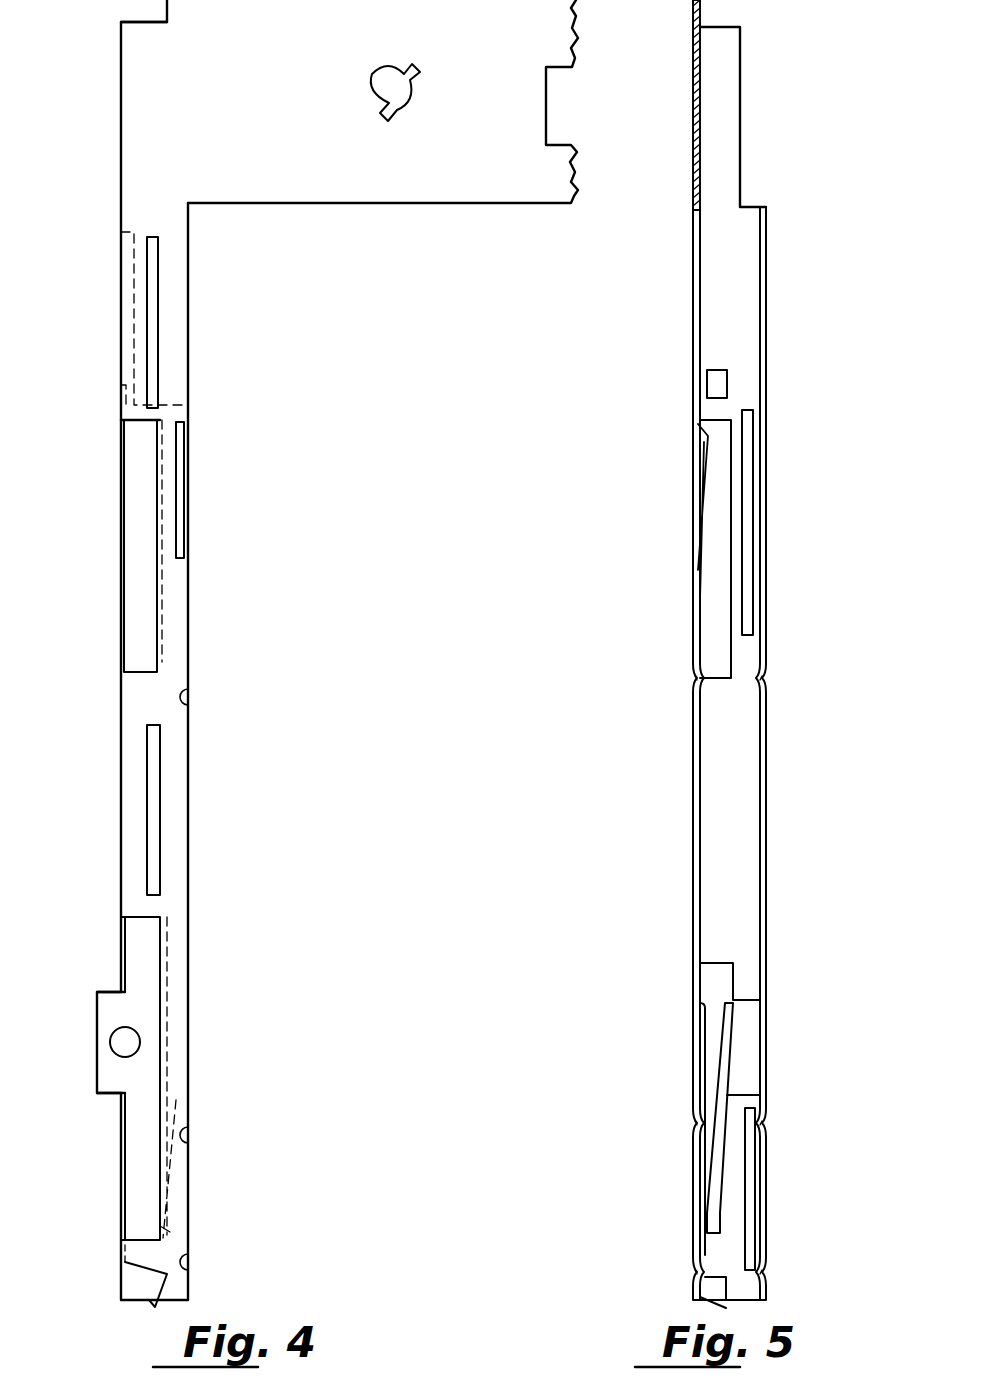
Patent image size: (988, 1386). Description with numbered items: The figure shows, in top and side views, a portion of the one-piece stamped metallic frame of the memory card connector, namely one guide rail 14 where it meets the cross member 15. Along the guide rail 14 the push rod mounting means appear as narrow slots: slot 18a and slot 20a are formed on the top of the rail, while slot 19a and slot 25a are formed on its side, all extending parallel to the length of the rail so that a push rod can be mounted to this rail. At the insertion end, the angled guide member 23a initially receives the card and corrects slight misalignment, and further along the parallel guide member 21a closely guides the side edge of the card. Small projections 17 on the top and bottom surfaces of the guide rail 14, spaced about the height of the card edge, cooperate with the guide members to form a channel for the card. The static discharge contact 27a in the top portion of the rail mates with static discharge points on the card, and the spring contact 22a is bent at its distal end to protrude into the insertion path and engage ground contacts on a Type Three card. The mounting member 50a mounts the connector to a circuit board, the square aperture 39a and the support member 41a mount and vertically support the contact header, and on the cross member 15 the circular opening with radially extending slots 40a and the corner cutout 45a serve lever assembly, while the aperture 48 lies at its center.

In FIG. 4, the guide rail 14 is at (120, 797).
In FIG. 4, the cross member 15 is at (450, 160).
In FIG. 5, the cross member 15 is at (700, 42).
In FIG. 4, the projections 17 is at (190, 698).
In FIG. 5, the projections 17 is at (707, 674).
In FIG. 4, the slot 18a is at (153, 326).
In FIG. 5, the slot 19a is at (748, 550).
In FIG. 4, the slot 20a is at (153, 810).
In FIG. 4, the guide member 21a is at (160, 582).
In FIG. 5, the guide member 21a is at (712, 605).
In FIG. 4, the spring contact 22a is at (172, 1195).
In FIG. 5, the spring contact 22a is at (715, 1050).
In FIG. 4, the guide member 23a is at (160, 1292).
In FIG. 5, the guide member 23a is at (715, 1288).
In FIG. 5, the slot 25a is at (750, 1198).
In FIG. 4, the static discharge contact 27a is at (186, 483).
In FIG. 5, the static discharge contact 27a is at (700, 455).
In FIG. 4, the square aperture 39a is at (123, 390).
In FIG. 5, the square aperture 39a is at (708, 378).
In FIG. 4, the circular opening with radially extending slots 40a is at (364, 76).
In FIG. 4, the support member 41a is at (127, 300).
In FIG. 5, the support member 41a is at (768, 250).
In FIG. 4, the cutout 45a is at (148, 5).
In FIG. 4, the aperture 48 is at (562, 106).
In FIG. 5, the aperture 48 is at (700, 118).
In FIG. 4, the mounting member 50a is at (107, 1018).
In FIG. 5, the mounting member 50a is at (768, 1047).